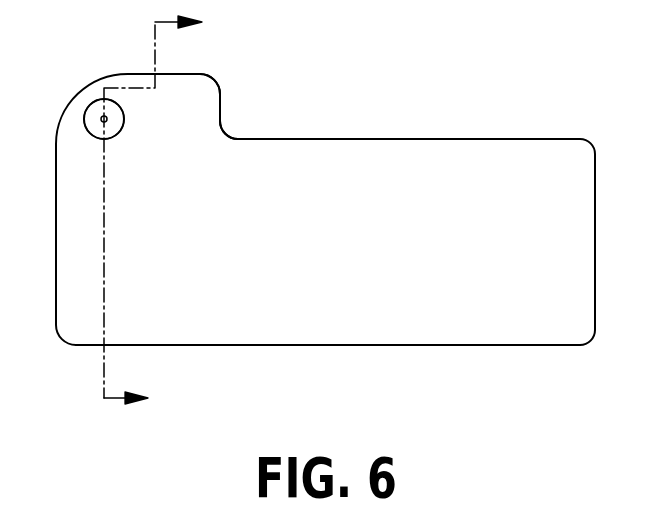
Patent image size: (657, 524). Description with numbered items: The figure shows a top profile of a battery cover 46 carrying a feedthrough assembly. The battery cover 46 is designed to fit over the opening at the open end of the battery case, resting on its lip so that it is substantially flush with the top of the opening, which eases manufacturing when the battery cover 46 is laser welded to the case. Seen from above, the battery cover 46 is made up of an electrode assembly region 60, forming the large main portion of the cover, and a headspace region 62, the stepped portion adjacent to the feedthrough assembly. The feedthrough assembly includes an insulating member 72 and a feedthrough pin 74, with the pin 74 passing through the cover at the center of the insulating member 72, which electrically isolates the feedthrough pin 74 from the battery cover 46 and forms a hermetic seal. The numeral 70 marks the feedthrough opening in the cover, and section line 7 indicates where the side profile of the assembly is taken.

The electrode assembly region 60 is at (323, 256).
The headspace region 62 is at (203, 115).
The battery cover 46 is at (398, 345).
The insulating member 72 is at (92, 113).
The aperture 70 is at (103, 116).
The feedthrough pin 74 is at (98, 119).
The section line 7- 7 is at (163, 210).